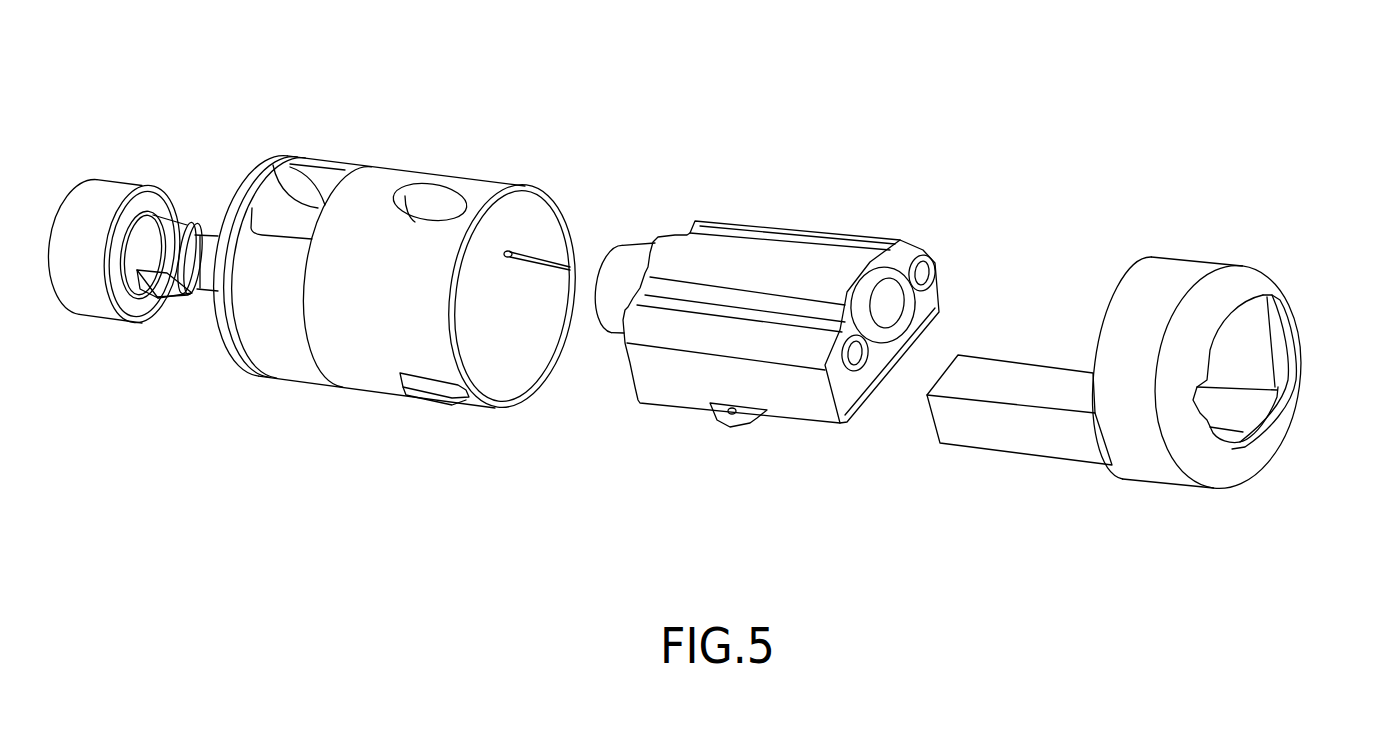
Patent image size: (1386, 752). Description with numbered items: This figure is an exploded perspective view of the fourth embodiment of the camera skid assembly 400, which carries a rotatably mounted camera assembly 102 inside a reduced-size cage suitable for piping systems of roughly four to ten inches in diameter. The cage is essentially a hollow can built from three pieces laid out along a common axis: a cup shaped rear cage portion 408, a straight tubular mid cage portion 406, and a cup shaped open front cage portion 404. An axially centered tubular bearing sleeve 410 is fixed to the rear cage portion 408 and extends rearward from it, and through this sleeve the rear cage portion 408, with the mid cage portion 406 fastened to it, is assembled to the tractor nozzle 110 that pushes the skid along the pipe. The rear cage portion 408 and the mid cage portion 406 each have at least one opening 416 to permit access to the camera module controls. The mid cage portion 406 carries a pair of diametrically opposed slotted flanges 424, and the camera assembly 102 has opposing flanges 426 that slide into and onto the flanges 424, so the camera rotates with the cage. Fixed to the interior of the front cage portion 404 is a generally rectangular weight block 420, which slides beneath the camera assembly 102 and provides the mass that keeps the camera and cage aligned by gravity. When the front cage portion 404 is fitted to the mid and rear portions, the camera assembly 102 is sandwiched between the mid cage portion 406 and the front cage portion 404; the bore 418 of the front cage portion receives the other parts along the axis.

The camera skid assembly 400 is at (1038, 110).
The tractor nozzle 110 is at (140, 188).
The tubular bearing sleeve 410 is at (203, 278).
The rear cage portion 408 is at (270, 378).
The mid cage portion 406 is at (510, 186).
The opening 416 is at (327, 164).
The slotted flange 424 is at (440, 387).
The camera assembly 102 is at (899, 238).
The flange 426 is at (733, 413).
The weight block 420 is at (1017, 445).
The front cage portion 404 is at (1203, 259).
The bore opening 418 is at (1285, 352).